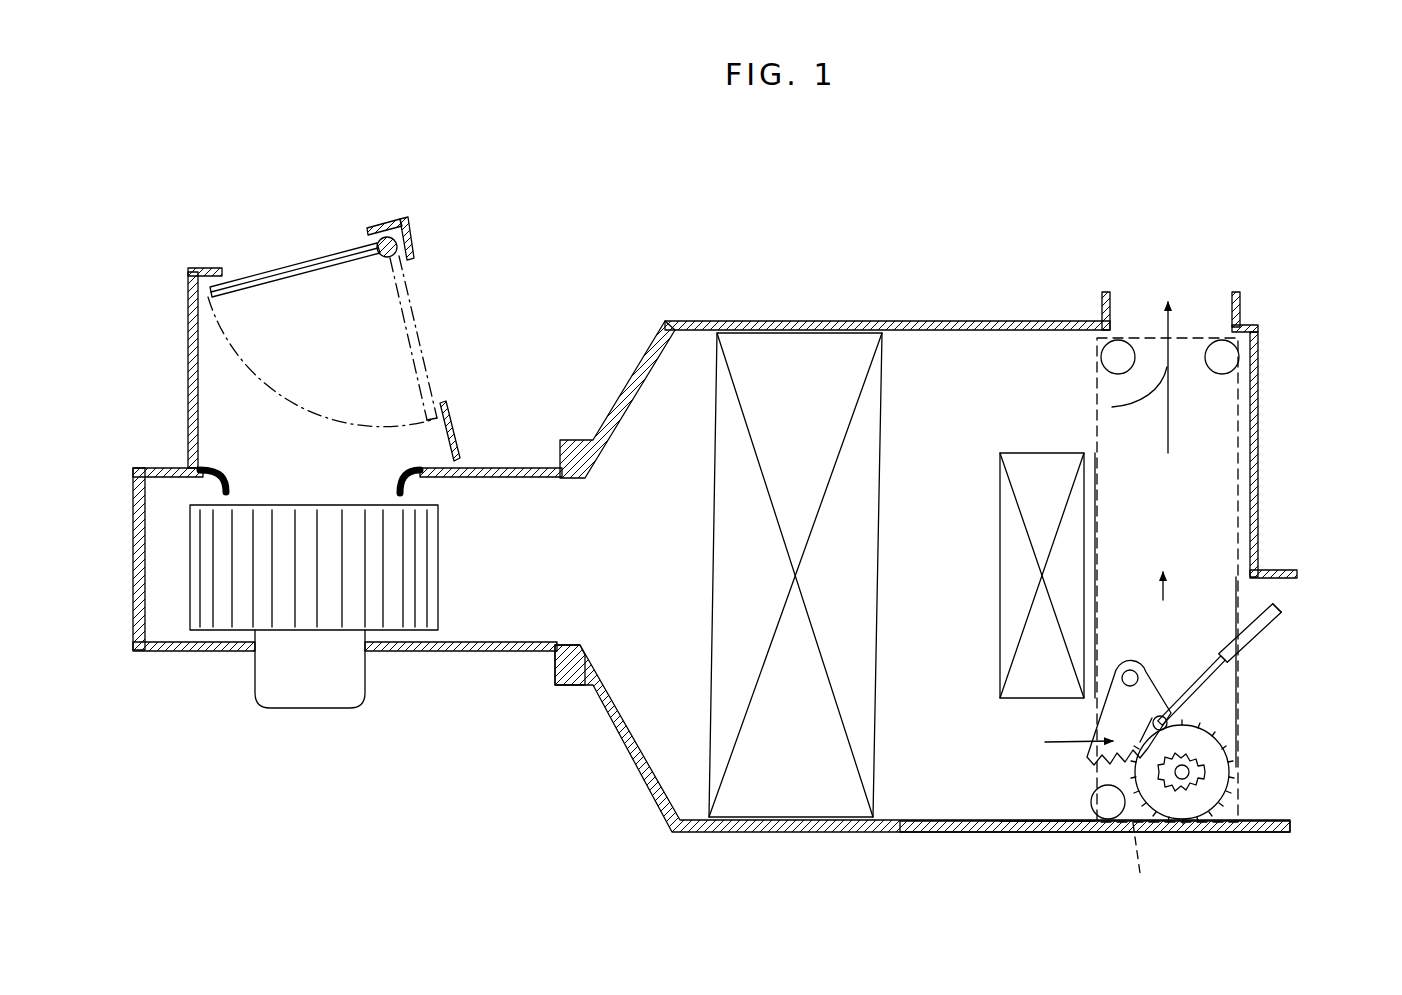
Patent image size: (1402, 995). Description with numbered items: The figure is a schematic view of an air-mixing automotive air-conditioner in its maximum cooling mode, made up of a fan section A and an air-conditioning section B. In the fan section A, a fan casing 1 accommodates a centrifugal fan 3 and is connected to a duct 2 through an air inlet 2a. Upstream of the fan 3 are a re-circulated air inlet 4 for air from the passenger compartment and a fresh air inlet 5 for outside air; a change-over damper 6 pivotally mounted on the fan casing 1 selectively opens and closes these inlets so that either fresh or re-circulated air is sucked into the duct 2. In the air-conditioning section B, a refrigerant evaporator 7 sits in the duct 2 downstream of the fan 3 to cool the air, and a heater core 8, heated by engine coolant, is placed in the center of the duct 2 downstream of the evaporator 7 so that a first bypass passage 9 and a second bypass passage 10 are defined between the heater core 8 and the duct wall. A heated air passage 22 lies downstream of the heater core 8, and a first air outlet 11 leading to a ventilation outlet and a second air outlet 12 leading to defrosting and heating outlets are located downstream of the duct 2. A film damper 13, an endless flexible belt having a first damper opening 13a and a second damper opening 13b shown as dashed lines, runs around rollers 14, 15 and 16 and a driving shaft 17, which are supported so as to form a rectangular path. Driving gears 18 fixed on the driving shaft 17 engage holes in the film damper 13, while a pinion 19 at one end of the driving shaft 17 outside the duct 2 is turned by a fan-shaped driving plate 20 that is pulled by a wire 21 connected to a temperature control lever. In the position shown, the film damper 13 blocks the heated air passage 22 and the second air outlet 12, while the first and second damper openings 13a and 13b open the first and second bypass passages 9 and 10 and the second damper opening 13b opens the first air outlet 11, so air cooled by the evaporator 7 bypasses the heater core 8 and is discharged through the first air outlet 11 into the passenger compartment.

The fan casing 1 is at (445, 650).
The duct 2 is at (928, 321).
The air inlet 2a is at (557, 570).
The centrifugal fan 3 is at (310, 709).
The re-circulated air inlet 4 is at (223, 272).
The fresh air inlet 5 is at (446, 403).
The change-over damper 6 is at (360, 262).
The refrigerant evaporator 7 is at (715, 385).
The heater core 8 is at (1042, 453).
The first bypass passage 9 is at (1080, 390).
The second bypass passage 10 is at (1037, 768).
The first air outlet 11 is at (1233, 330).
The second air outlet 12 is at (1277, 827).
The film damper 13 is at (1245, 720).
The first damper opening 13a is at (1150, 871).
The second damper opening 13b is at (1262, 453).
The roller 14 is at (1225, 355).
The roller 15 is at (1120, 355).
The roller 16 is at (1100, 812).
The driving shaft 17 is at (1175, 797).
The driving gear 18 is at (1198, 800).
The pinion 19 is at (1190, 772).
The driving plate 20 is at (1117, 765).
The wire 21 is at (1263, 633).
The heated air passage 22 is at (1092, 538).
The fan section A is at (414, 212).
The air-conditioning section B is at (988, 272).